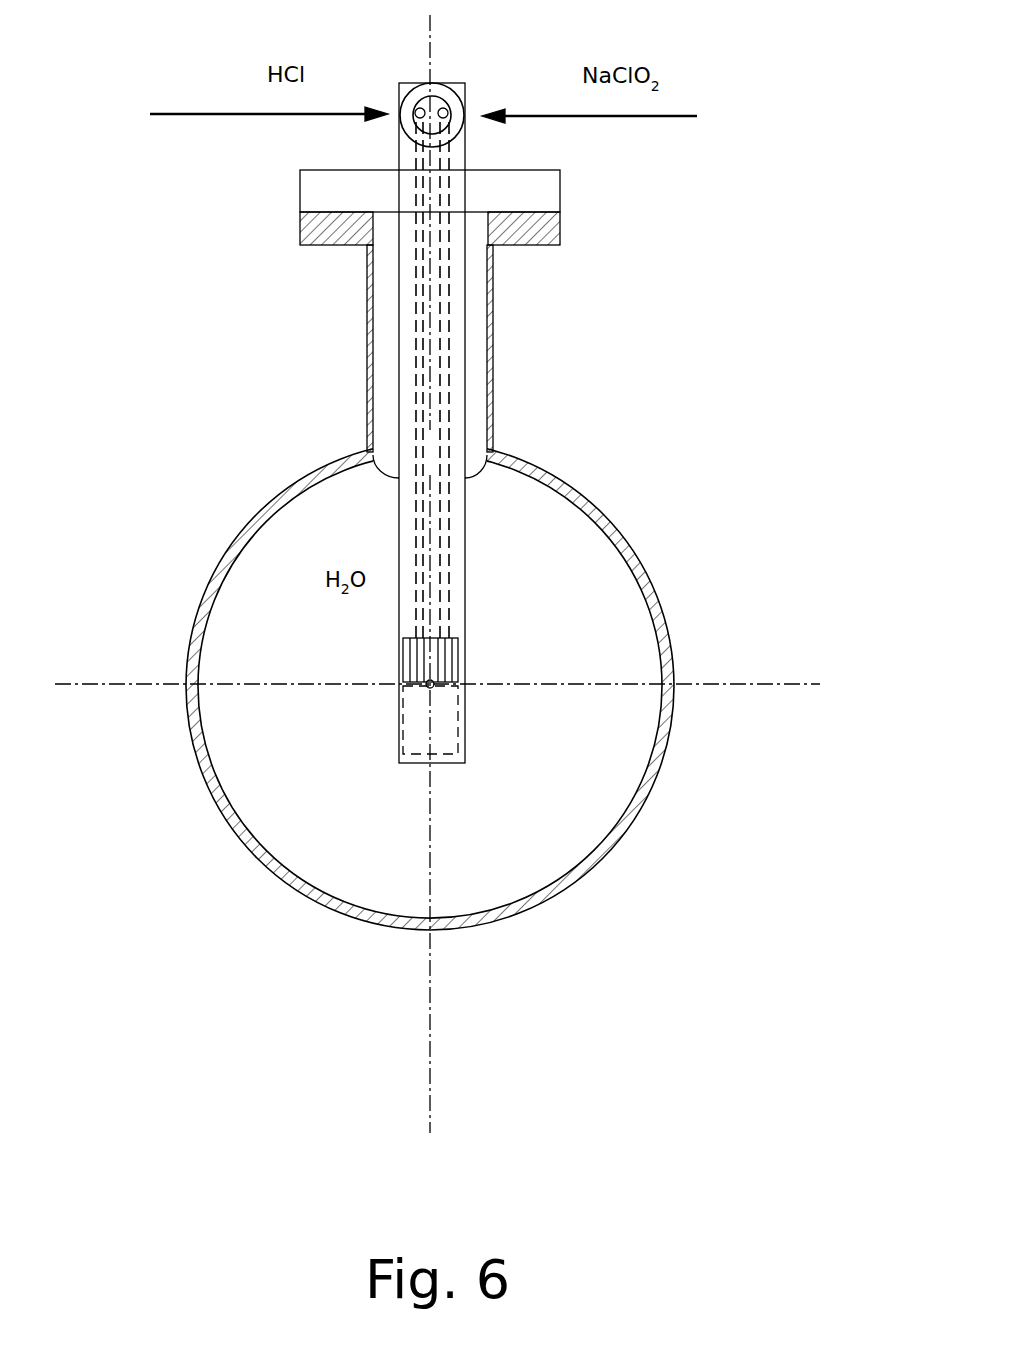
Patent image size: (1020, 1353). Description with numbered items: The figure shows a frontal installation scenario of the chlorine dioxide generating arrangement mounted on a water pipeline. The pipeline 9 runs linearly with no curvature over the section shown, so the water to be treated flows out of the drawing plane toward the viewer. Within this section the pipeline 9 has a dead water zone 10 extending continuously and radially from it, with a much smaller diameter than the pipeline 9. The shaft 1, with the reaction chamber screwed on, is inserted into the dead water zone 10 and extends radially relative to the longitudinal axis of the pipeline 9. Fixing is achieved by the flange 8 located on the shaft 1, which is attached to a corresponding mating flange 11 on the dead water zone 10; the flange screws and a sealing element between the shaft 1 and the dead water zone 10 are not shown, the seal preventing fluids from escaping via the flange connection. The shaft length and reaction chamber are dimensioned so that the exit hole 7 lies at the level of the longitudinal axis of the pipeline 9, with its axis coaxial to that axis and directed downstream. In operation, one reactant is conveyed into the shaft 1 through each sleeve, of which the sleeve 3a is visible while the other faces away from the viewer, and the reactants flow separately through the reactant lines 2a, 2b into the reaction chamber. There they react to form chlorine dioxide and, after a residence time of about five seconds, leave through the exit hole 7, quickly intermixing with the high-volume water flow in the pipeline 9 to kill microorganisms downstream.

The shaft 1 is at (458, 288).
The reactant line 2a is at (423, 322).
The reactant line 2b is at (443, 398).
The sleeve 3a is at (454, 103).
The exit hole 7 is at (423, 690).
The flange 8 is at (527, 192).
The pipeline 9 is at (618, 830).
The dead water zone 10 is at (492, 349).
The mating flange 11 is at (301, 230).